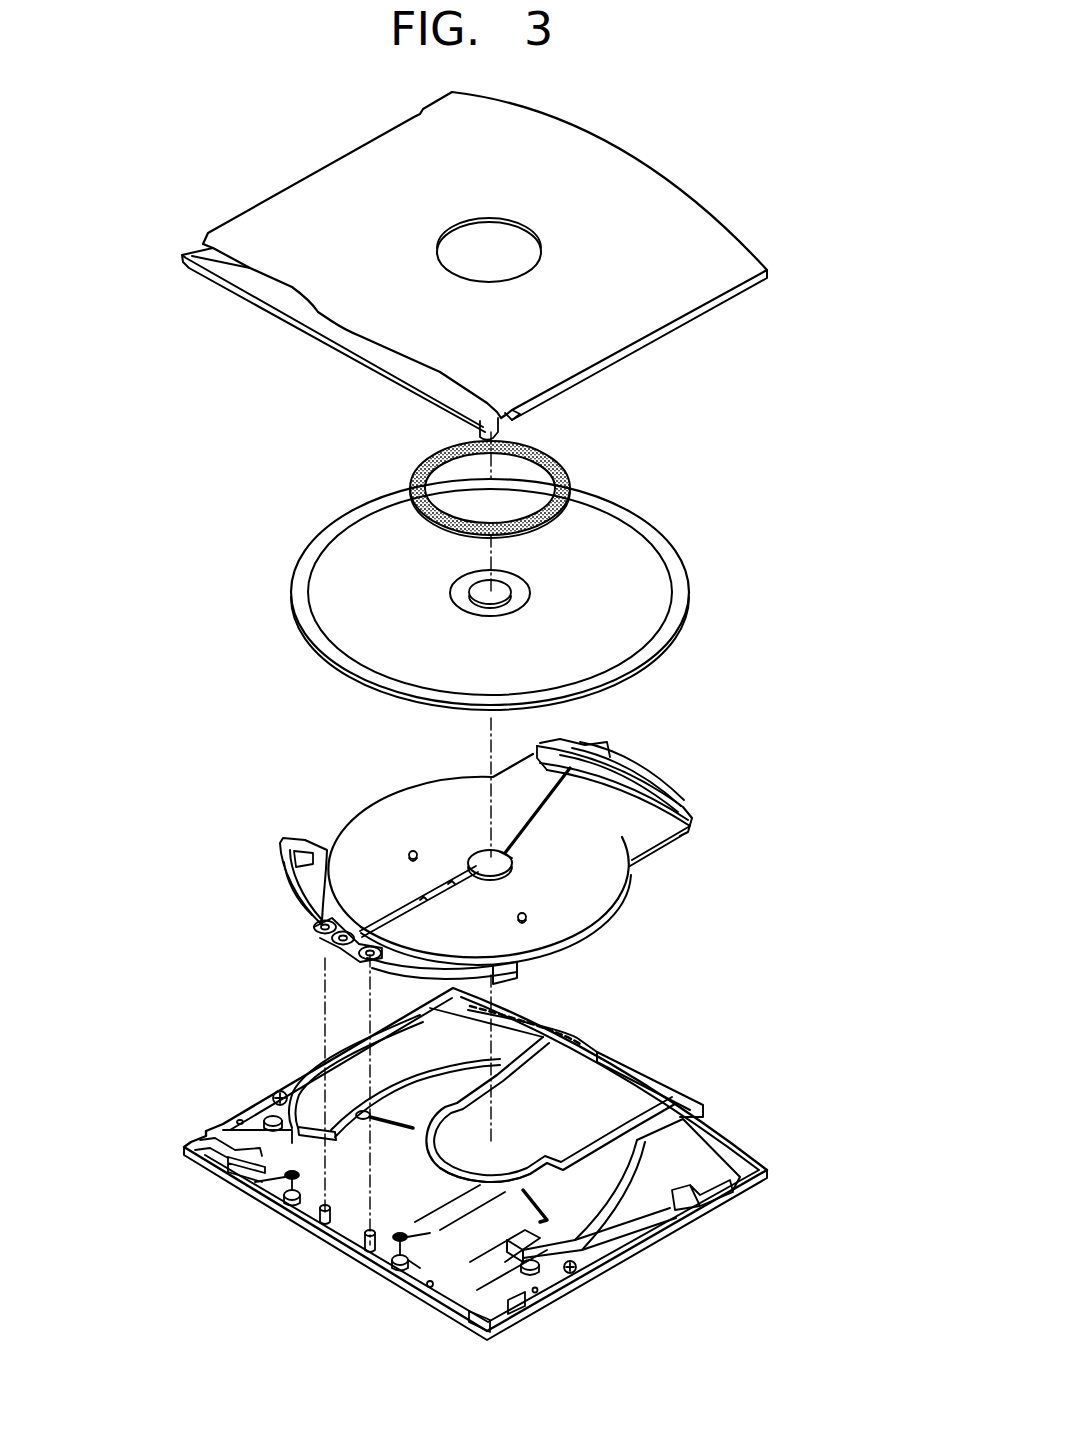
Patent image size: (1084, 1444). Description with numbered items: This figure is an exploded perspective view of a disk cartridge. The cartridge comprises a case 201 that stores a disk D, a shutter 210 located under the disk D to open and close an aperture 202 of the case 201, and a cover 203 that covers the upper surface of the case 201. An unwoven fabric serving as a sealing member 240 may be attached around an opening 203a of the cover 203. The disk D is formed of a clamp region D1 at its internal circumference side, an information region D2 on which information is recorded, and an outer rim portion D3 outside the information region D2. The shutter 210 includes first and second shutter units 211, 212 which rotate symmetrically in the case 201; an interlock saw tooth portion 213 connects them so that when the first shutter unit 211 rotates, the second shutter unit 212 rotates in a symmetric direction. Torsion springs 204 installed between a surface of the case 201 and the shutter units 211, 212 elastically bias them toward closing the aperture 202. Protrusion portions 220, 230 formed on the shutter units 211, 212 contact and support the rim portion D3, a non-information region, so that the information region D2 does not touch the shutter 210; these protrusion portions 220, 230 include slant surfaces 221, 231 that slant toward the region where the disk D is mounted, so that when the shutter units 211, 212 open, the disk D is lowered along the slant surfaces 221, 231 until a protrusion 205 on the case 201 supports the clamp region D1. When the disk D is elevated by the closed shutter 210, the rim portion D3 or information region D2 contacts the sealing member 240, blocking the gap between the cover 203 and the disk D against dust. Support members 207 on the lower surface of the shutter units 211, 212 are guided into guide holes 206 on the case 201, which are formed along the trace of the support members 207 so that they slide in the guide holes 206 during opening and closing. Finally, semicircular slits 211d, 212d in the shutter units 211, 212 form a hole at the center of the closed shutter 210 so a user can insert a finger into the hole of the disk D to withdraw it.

The case 201 is at (491, 1164).
The aperture 202 is at (617, 1090).
The cover 203 is at (281, 197).
The opening 203a is at (494, 238).
The torsion springs 204 is at (285, 1185).
The protrusion 205 is at (473, 1182).
The guide holes 206 is at (407, 1122).
The support members 207 is at (409, 856).
The shutter 210 is at (466, 885).
The first shutter unit 211 is at (405, 808).
The semicircular slit 211d is at (486, 855).
The second shutter unit 212 is at (595, 892).
The semicircular slit 212d is at (512, 856).
The interlock saw tooth portion 213 is at (343, 957).
The protrusion portion 220 is at (629, 790).
The slant surface 221 is at (608, 780).
The protrusion portion 230 is at (363, 914).
The slant surface 231 is at (308, 885).
The sealing member 240 is at (562, 472).
The disk D is at (471, 590).
The clamp region D1 is at (517, 586).
The information region D2 is at (628, 603).
The rim portion D3 is at (683, 586).